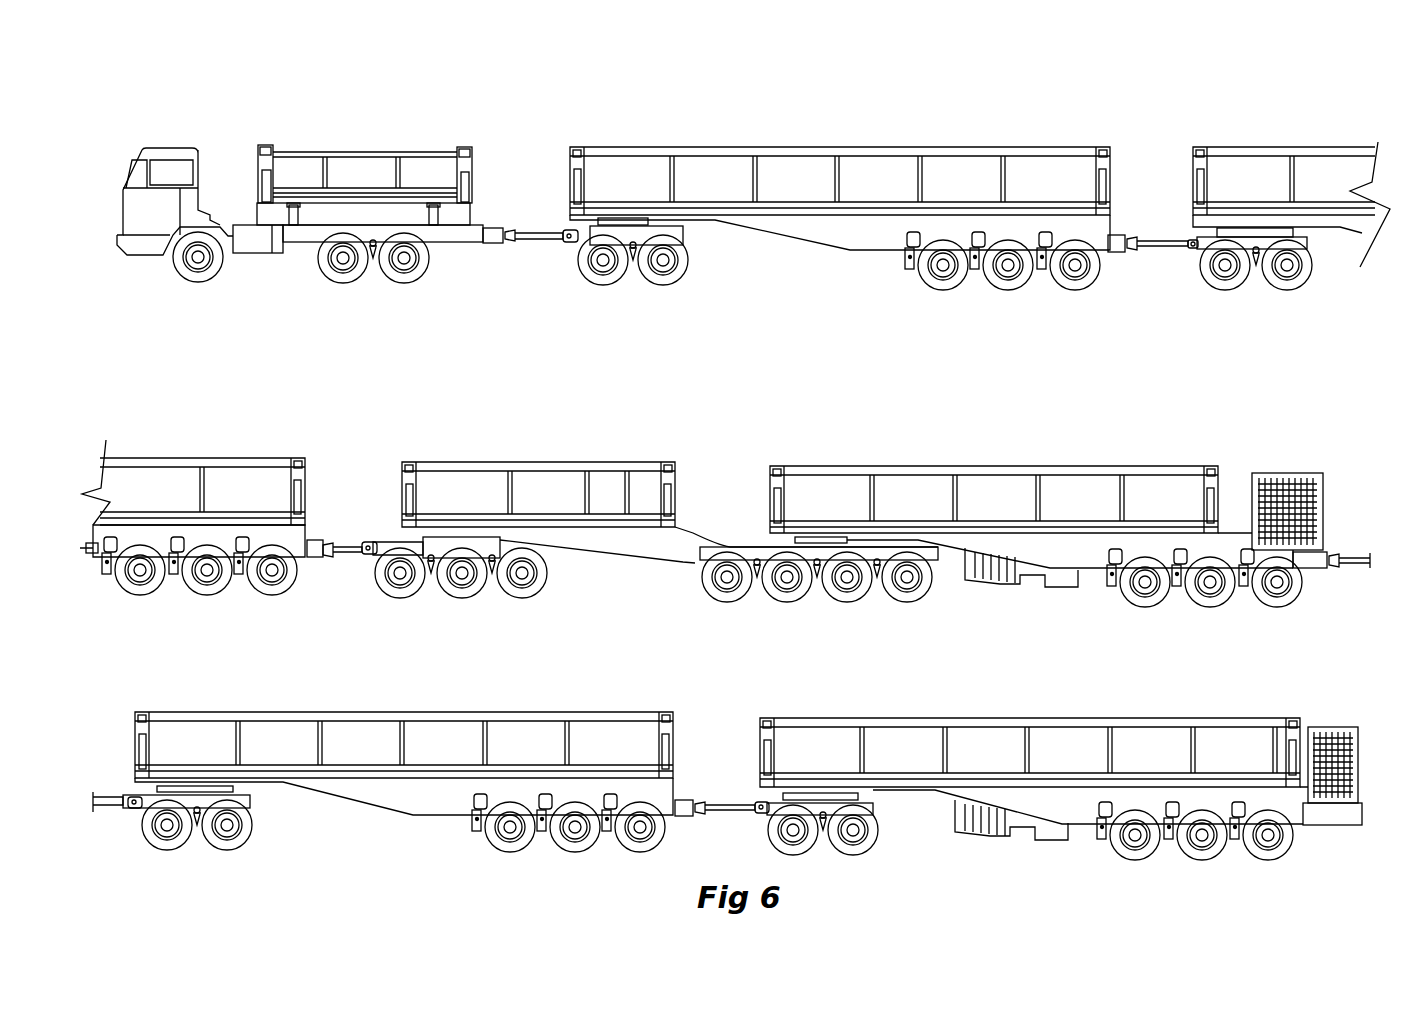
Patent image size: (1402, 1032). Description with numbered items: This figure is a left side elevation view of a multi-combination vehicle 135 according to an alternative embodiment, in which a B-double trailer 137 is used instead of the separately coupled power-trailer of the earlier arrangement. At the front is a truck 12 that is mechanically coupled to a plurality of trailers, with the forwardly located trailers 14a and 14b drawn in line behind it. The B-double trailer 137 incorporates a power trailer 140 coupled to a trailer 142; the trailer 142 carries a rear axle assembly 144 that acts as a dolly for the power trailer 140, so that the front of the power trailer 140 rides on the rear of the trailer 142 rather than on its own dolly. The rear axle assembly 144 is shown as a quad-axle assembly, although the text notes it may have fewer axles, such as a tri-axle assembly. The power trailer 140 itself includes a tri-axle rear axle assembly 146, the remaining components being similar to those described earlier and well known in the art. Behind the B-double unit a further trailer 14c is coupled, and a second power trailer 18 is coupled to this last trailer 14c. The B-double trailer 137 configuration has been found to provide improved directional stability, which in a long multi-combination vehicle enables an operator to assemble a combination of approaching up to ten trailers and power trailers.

The truck 12 is at (435, 140).
The trailer 14a is at (823, 143).
The trailer 14b is at (221, 446).
The trailer 14c is at (438, 708).
The multi-combination vehicle 135 is at (1279, 123).
The B-double trailer 137 is at (1330, 460).
The power trailer 140 is at (1071, 464).
The trailer 142 is at (469, 492).
The rear axle assembly 144 is at (938, 602).
The tri-axle rear axle assembly 146 is at (1305, 604).
The second power trailer 18 is at (1010, 708).